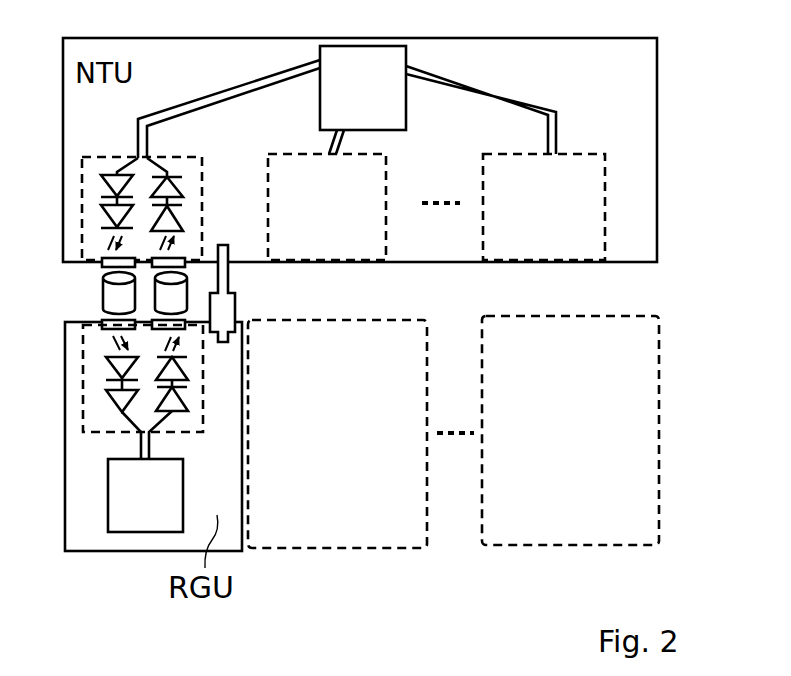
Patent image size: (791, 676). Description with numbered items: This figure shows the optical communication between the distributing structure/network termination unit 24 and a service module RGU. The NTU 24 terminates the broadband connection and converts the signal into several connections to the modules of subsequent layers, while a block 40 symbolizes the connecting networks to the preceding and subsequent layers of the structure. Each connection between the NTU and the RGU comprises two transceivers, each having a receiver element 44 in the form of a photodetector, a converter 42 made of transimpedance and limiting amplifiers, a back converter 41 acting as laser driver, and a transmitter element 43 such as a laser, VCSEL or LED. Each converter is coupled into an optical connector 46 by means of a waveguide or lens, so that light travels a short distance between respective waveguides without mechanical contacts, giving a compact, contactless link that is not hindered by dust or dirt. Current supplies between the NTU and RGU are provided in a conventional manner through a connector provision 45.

The distributing structure/network termination unit 24 is at (658, 120).
The block 40 is at (406, 52).
The back converter 41 is at (113, 173).
The converter 42 is at (175, 185).
The transmitter element 43 is at (105, 215).
The receiver element 44 is at (175, 230).
The connector provision 45 is at (228, 282).
The optical connector 46 is at (100, 300).